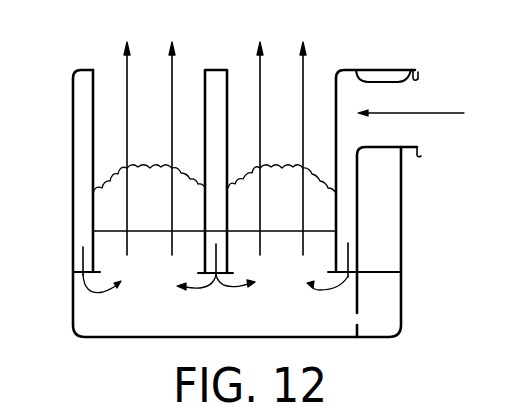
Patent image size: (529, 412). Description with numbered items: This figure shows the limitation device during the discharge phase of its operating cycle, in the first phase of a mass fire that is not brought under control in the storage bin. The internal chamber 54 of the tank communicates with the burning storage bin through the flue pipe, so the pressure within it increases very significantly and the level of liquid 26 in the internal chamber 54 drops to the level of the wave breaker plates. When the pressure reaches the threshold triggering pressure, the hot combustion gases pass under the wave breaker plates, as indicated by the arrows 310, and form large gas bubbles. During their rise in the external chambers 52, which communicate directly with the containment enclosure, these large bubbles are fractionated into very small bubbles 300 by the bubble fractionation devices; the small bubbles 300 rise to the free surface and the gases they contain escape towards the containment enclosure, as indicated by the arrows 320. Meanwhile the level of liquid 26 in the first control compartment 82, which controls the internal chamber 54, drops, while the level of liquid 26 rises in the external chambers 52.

The liquid 26 is at (158, 325).
The external chambers 52 is at (163, 127).
The internal chamber 54 is at (85, 107).
The first control compartment 82 is at (376, 244).
The small bubbles 300 is at (110, 213).
The arrows (passage of hot combustion gases) 310 is at (90, 297).
The arrows (escape of gases) 320 is at (302, 63).